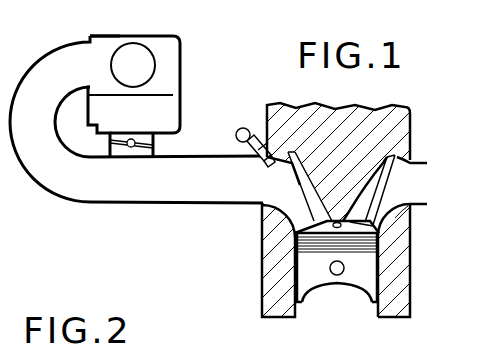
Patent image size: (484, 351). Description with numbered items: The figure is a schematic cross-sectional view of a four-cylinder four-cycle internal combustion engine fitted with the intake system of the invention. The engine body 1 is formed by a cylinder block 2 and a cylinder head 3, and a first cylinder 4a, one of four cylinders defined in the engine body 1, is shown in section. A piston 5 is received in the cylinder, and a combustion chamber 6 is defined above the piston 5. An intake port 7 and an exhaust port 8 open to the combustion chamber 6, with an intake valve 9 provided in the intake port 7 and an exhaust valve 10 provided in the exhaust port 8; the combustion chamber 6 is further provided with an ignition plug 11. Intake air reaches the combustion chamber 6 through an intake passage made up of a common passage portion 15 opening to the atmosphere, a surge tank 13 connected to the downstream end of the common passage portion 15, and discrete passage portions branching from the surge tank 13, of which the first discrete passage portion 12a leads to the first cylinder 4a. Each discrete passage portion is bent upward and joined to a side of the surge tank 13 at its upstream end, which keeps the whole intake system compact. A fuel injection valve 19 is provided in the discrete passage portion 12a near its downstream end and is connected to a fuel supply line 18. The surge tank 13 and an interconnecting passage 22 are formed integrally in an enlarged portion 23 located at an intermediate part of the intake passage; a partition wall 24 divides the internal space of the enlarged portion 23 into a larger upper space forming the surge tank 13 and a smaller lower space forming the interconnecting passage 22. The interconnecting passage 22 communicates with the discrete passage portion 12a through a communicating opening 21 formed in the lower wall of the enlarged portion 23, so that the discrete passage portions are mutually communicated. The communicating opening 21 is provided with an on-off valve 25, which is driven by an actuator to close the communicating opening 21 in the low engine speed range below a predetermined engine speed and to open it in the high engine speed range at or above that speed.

The engine body 1 is at (262, 284).
The cylinder block 2 is at (402, 291).
The cylinder head 3 is at (404, 129).
The first cylinder 4a is at (320, 306).
The piston 5 is at (365, 267).
The combustion chamber 6 is at (297, 232).
The intake port 7 is at (264, 223).
The exhaust port 8 is at (378, 220).
The intake valve 9 is at (303, 176).
The exhaust valve 10 is at (375, 183).
The ignition plug 11 is at (338, 228).
The first discrete passage portion 12a is at (46, 191).
The surge tank 13 is at (181, 47).
The common passage portion 15 is at (138, 47).
The fuel supply line 18 is at (246, 128).
The fuel injection valve 19 is at (246, 146).
The communicating opening 21 is at (111, 145).
The interconnecting passage 22 is at (160, 123).
The enlarged portion 23 is at (89, 36).
The partition wall 24 is at (160, 91).
The on-off valve 25 is at (138, 148).